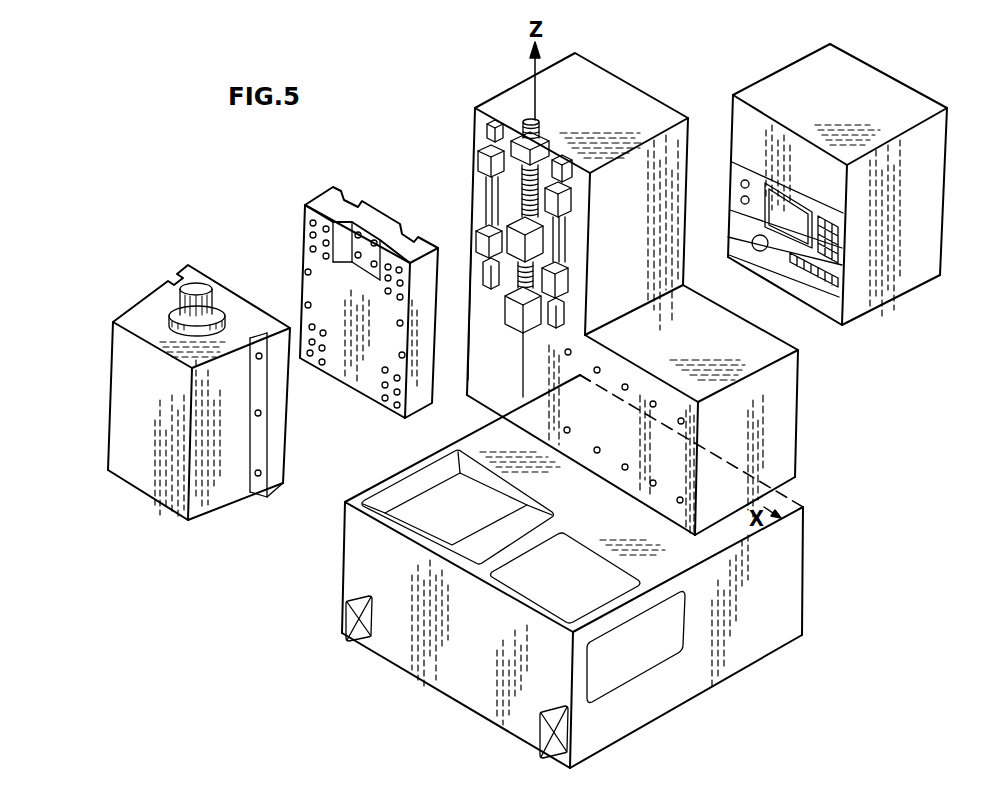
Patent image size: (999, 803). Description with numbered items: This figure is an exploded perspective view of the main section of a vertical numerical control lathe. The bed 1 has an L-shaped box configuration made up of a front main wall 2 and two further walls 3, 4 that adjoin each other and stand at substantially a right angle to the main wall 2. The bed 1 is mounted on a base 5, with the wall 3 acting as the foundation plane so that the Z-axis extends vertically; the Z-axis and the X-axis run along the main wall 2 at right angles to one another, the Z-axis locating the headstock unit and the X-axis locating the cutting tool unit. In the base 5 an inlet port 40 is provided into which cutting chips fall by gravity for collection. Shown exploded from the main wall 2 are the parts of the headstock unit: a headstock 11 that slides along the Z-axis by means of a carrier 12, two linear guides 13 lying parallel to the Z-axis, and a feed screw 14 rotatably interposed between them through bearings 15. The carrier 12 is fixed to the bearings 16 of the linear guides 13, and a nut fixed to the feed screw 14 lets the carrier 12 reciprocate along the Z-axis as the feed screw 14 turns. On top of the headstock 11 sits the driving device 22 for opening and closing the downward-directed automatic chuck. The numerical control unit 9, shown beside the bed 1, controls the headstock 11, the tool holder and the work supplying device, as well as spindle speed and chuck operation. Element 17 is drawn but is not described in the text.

The bed 1 is at (632, 99).
The front main wall 2 is at (574, 334).
The wall 3 is at (593, 472).
The wall 4 is at (470, 330).
The base 5 is at (353, 567).
The numerical control unit 9 is at (931, 192).
The headstock 11 is at (118, 394).
The carrier 12 is at (310, 258).
The linear guides 13 is at (490, 197).
The feed screw 14 is at (540, 125).
The bearings 15 is at (511, 321).
The bearings 16 is at (484, 163).
The threaded spindle 17 is at (513, 258).
The driving device 22 is at (168, 308).
The inlet port 40 is at (421, 522).